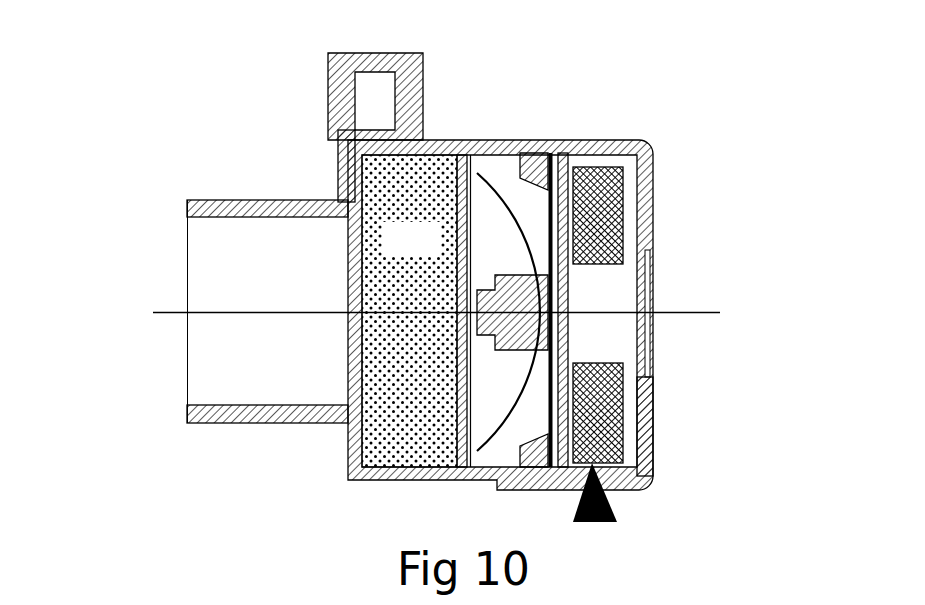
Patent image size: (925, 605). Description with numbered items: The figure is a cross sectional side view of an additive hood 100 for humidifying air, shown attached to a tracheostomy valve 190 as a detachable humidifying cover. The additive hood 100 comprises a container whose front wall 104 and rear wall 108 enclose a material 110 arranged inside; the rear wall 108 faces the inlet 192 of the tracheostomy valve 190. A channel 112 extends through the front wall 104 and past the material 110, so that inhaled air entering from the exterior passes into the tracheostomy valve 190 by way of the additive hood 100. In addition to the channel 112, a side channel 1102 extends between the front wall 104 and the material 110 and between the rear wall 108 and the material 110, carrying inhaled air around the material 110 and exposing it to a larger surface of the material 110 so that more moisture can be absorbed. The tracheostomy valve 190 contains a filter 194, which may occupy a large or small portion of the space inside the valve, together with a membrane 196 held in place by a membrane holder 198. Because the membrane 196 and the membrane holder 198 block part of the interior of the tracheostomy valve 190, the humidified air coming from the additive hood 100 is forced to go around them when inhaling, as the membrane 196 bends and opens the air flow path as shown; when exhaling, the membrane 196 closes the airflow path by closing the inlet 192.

The additive hood 100 is at (683, 120).
The front wall 104 is at (675, 410).
The rear wall 108 is at (540, 373).
The material 110 is at (595, 522).
The channel 112 is at (668, 295).
The tracheostomy valve 190 is at (330, 435).
The inlet 192 is at (522, 421).
The filter 194 is at (409, 311).
The membrane 196 is at (625, 208).
The membrane holder 198 is at (566, 323).
The side channel 1102 is at (593, 163).